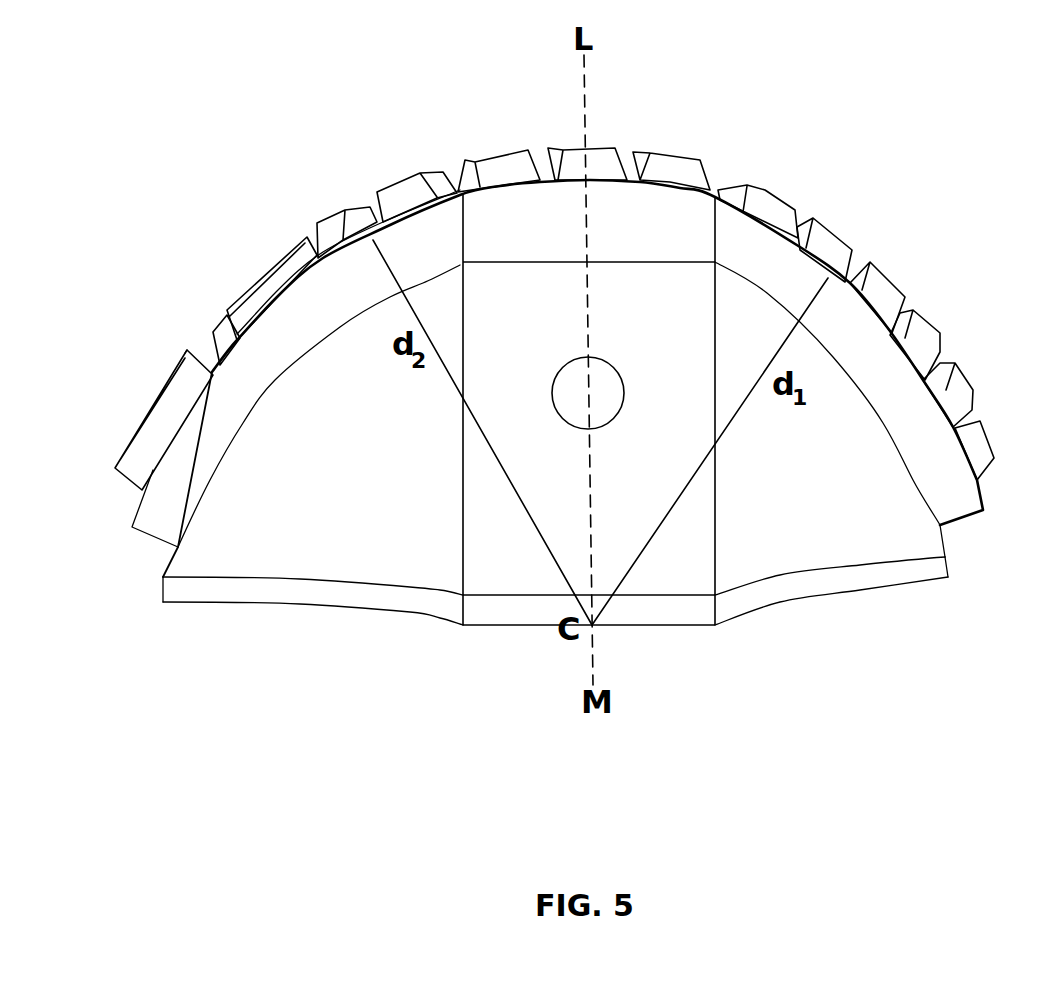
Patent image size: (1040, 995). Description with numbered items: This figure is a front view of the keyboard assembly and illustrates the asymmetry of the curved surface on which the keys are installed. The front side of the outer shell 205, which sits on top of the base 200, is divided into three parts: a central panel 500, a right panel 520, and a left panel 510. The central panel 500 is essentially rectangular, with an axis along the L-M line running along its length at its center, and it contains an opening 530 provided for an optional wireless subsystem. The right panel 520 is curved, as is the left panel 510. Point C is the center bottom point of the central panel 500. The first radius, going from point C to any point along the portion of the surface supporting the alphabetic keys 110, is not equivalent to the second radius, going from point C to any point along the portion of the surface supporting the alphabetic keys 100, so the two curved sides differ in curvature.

The alphabetic keys 100 is at (313, 226).
The alphabetic keys 110 is at (890, 273).
The base 200 is at (688, 607).
The outer shell 205 is at (660, 208).
The central panel 500 is at (502, 572).
The left panel 510 is at (282, 553).
The right panel 520 is at (813, 537).
The opening 530 is at (612, 384).